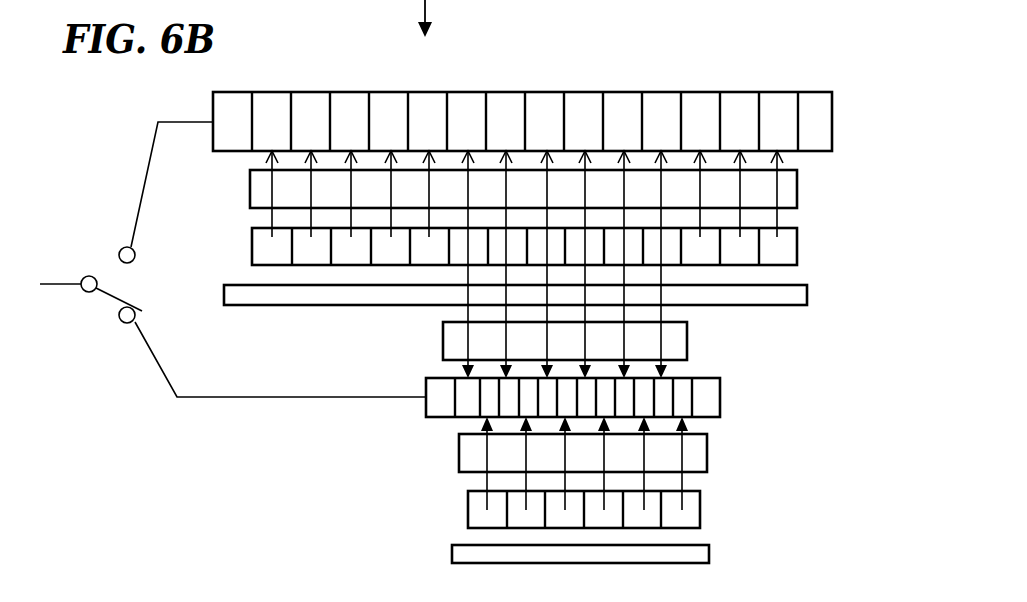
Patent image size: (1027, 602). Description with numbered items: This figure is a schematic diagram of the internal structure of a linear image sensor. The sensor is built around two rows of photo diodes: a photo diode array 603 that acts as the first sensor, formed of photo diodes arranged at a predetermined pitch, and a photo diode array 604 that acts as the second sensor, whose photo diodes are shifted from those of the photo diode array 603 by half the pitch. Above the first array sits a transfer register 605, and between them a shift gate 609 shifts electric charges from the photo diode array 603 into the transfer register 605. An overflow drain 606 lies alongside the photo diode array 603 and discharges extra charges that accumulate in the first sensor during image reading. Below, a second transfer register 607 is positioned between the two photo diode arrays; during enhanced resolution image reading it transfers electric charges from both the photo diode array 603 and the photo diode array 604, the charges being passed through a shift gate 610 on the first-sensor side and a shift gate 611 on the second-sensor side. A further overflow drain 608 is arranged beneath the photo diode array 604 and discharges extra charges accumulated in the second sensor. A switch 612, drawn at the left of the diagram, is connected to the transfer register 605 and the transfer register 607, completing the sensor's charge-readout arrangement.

The photo diode array 603 is at (797, 247).
The photo diode array 604 is at (700, 508).
The transfer register 605 is at (705, 92).
The overflow drain 606 is at (757, 305).
The transfer register 607 is at (720, 397).
The overflow drain 608 is at (709, 551).
The shift gate 609 is at (797, 183).
The shift gate 610 is at (687, 343).
The shift gate 611 is at (707, 453).
The switch 612 is at (113, 300).